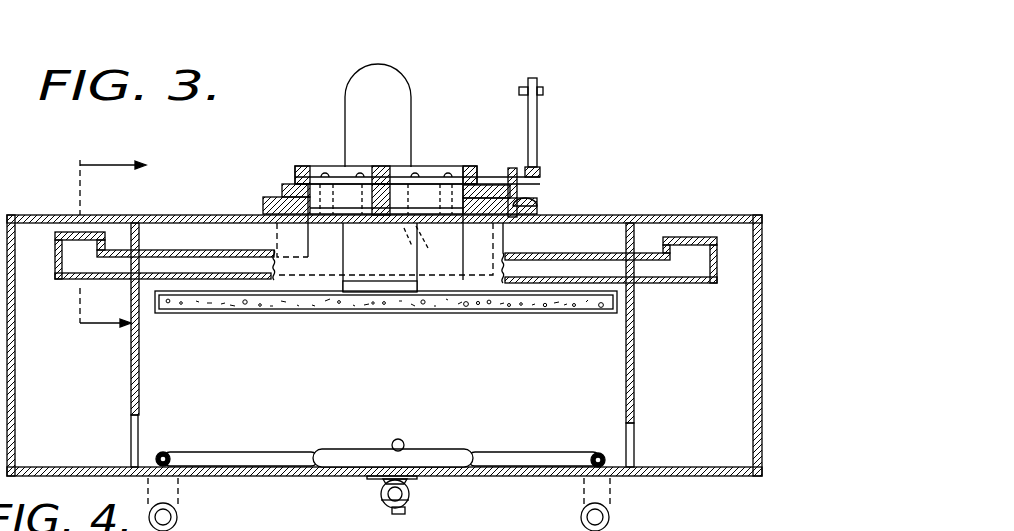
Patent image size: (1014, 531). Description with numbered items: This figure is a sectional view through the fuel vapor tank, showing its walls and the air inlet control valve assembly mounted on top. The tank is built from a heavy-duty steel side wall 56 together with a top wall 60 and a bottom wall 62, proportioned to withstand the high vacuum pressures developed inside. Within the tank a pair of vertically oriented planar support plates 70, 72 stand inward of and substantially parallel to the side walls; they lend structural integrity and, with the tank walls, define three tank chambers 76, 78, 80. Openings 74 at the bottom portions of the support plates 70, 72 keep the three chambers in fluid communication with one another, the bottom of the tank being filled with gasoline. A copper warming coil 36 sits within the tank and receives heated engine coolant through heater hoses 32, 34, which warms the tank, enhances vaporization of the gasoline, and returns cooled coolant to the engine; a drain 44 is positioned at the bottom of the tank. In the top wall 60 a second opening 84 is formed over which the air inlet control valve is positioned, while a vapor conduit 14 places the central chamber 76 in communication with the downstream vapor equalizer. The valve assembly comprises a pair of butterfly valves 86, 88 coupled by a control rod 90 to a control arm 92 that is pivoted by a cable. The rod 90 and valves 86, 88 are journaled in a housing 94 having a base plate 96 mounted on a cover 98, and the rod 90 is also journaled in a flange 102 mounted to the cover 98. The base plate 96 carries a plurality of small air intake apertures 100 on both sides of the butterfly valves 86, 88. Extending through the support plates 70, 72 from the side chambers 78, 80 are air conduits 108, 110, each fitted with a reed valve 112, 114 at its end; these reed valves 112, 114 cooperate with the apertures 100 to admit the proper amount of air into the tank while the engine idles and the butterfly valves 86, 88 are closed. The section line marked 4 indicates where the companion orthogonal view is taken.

In FIG. 3, the vapor conduit 14 is at (388, 80).
In FIG. 3, the section line 4- 4 is at (107, 245).
In FIG. 3, the heater hose 32 is at (612, 515).
In FIG. 3, the heater hose 34 is at (178, 517).
In FIG. 3, the warming coil 36 is at (265, 455).
In FIG. 3, the drain 44 is at (412, 499).
In FIG. 3, the side wall 56 is at (416, 339).
In FIG. 3, the top wall 60 is at (40, 215).
In FIG. 4, the top wall 60 is at (359, 522).
In FIG. 3, the bottom wall 62 is at (716, 478).
In FIG. 3, the support plate 70 is at (626, 365).
In FIG. 3, the support plate 72 is at (140, 366).
In FIG. 3, the openings 74 is at (138, 436).
In FIG. 3, the tank chamber 76 is at (398, 373).
In FIG. 3, the tank chamber 78 is at (708, 376).
In FIG. 3, the tank chamber 80 is at (92, 394).
In FIG. 3, the second opening 84 is at (330, 218).
In FIG. 3, the butterfly valve 86 is at (425, 166).
In FIG. 3, the butterfly valve 88 is at (334, 166).
In FIG. 3, the control rod 90 is at (484, 176).
In FIG. 3, the control arm 92 is at (537, 137).
In FIG. 3, the housing 94 is at (283, 185).
In FIG. 3, the base plate 96 is at (268, 198).
In FIG. 3, the cover 98 is at (226, 212).
In FIG. 3, the air intake apertures 100 is at (434, 249).
In FIG. 3, the flange 102 is at (545, 211).
In FIG. 3, the air conduit 108 is at (662, 283).
In FIG. 3, the air conduit 110 is at (72, 281).
In FIG. 3, the reed valve 112 is at (698, 245).
In FIG. 3, the reed valve 114 is at (70, 243).